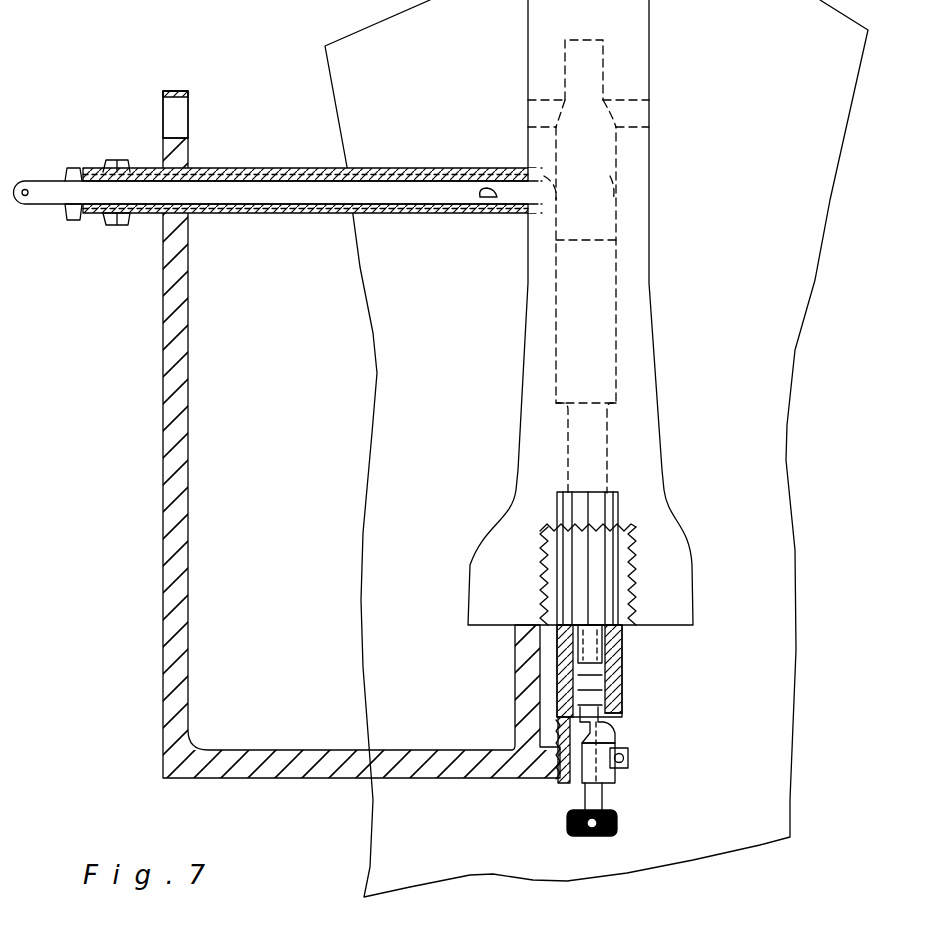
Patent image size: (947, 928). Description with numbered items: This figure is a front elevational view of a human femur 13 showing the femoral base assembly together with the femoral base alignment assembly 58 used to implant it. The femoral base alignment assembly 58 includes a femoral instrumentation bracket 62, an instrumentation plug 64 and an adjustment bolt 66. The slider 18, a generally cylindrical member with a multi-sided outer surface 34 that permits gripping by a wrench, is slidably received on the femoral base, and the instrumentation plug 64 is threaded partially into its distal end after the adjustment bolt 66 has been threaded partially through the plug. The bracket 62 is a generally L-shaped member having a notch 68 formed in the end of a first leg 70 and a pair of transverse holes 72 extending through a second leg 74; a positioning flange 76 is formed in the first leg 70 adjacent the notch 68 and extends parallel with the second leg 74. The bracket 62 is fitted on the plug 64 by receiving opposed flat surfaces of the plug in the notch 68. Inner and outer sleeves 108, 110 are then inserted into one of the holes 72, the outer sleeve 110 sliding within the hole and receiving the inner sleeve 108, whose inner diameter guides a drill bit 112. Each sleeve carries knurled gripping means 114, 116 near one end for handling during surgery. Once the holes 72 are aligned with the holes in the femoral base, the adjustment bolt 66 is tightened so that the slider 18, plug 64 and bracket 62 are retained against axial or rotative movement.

The femur 13 is at (624, 32).
The slider 18 is at (628, 541).
The multi-sided outer surface 34 is at (610, 582).
The femoral base alignment assembly 58 is at (645, 748).
The femoral instrumentation bracket 62 is at (196, 576).
The instrumentation plug 64 is at (640, 728).
The adjustment bolt 66 is at (574, 801).
The notch 68 is at (629, 767).
The first leg 70 is at (283, 762).
The transverse holes 72 is at (177, 103).
The second leg 74 is at (178, 668).
The positioning flange 76 is at (528, 674).
The inner sleeve 108 is at (215, 214).
The outer sleeve 110 is at (290, 220).
The drill bit 112 is at (263, 190).
The knurled gripping means 114 is at (77, 218).
The knurled gripping means 116 is at (118, 220).